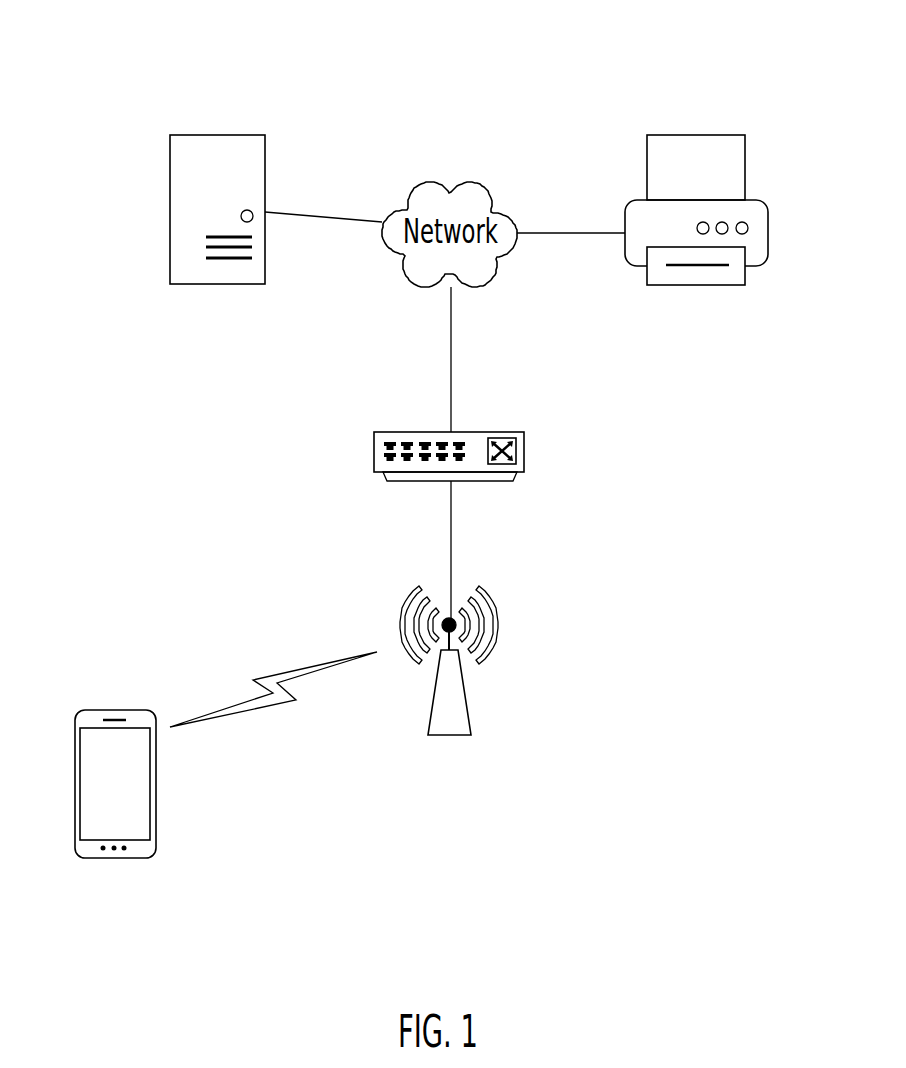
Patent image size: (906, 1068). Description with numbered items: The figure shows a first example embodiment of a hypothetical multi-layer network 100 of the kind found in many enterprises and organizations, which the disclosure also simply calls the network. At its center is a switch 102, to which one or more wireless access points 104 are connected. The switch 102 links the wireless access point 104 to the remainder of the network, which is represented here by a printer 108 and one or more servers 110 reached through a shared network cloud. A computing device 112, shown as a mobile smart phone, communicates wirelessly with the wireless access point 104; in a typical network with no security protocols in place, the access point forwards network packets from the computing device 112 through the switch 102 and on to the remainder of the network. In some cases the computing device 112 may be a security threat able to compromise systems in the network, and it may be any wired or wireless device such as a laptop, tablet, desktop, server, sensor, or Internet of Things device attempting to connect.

The multi-layer network 100 is at (451, 100).
The switch 102 is at (524, 455).
The wireless access point 104 is at (449, 735).
The printer 108 is at (696, 285).
The server 110 is at (218, 284).
The computing device 112 is at (113, 858).